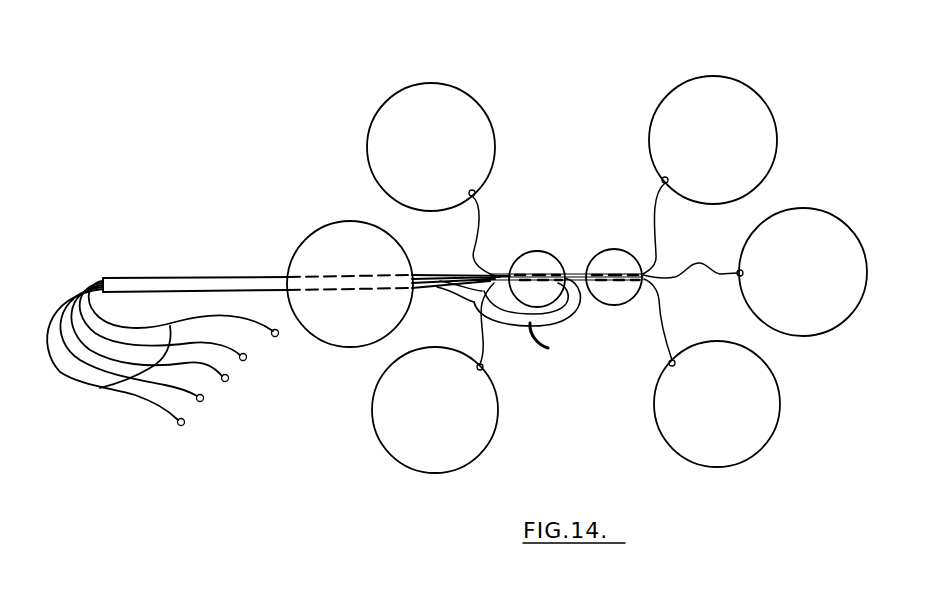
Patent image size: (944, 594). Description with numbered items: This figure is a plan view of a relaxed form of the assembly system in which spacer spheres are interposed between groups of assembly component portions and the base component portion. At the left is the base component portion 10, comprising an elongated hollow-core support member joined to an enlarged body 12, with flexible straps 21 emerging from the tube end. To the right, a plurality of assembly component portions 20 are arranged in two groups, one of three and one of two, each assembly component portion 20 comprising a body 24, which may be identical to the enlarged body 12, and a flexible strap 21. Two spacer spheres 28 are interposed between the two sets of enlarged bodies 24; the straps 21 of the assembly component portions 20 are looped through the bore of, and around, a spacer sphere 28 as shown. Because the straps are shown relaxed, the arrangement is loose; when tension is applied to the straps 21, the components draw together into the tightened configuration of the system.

The base component portion 10 is at (192, 261).
The enlarged body 12 is at (340, 221).
The assembly component portion 20 is at (428, 77).
The flexible strap 21 is at (128, 377).
The body 24 is at (473, 103).
The spacer sphere 28 is at (546, 251).